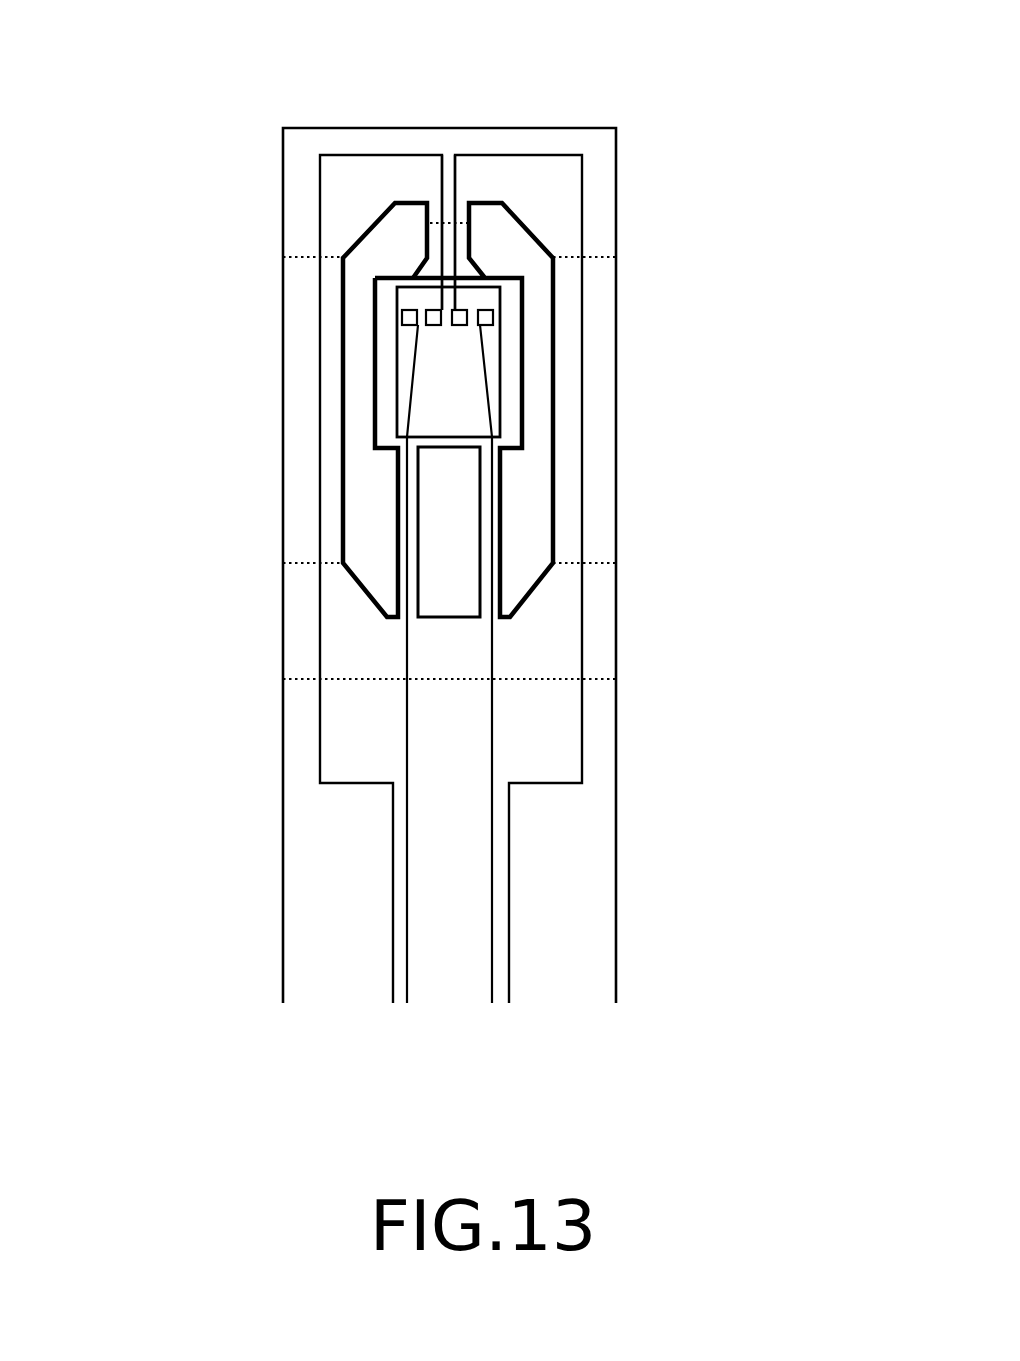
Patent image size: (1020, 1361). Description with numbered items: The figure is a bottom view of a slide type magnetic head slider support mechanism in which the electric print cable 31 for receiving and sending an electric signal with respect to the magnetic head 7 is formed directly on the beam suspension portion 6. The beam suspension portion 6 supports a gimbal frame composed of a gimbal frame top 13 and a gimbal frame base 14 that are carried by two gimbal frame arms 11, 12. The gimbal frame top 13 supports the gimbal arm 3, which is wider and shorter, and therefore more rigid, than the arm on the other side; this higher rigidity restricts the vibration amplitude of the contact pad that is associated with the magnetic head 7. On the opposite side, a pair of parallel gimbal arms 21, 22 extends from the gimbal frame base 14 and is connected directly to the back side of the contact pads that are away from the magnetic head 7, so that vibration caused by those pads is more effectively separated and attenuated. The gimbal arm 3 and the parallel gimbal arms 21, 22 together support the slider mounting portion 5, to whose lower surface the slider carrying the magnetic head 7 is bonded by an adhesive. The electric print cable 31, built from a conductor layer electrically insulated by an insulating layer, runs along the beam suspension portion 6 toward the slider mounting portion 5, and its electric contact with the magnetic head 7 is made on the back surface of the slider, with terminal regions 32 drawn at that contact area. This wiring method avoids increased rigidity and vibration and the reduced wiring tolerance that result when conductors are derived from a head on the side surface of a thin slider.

The gimbal arm 3 is at (467, 267).
The slider mounting portion 5 is at (392, 303).
The beam suspension portion 6 is at (460, 896).
The magnetic head 7 is at (437, 277).
The gimbal frame arm 11 is at (582, 475).
The gimbal frame arm 12 is at (305, 497).
The gimbal frame top 13 is at (418, 182).
The gimbal frame base 14 is at (450, 659).
The gimbal arm 21 is at (498, 518).
The gimbal arm 22 is at (403, 593).
The electric print cable 31 is at (318, 284).
The terminal pads 32 is at (480, 323).